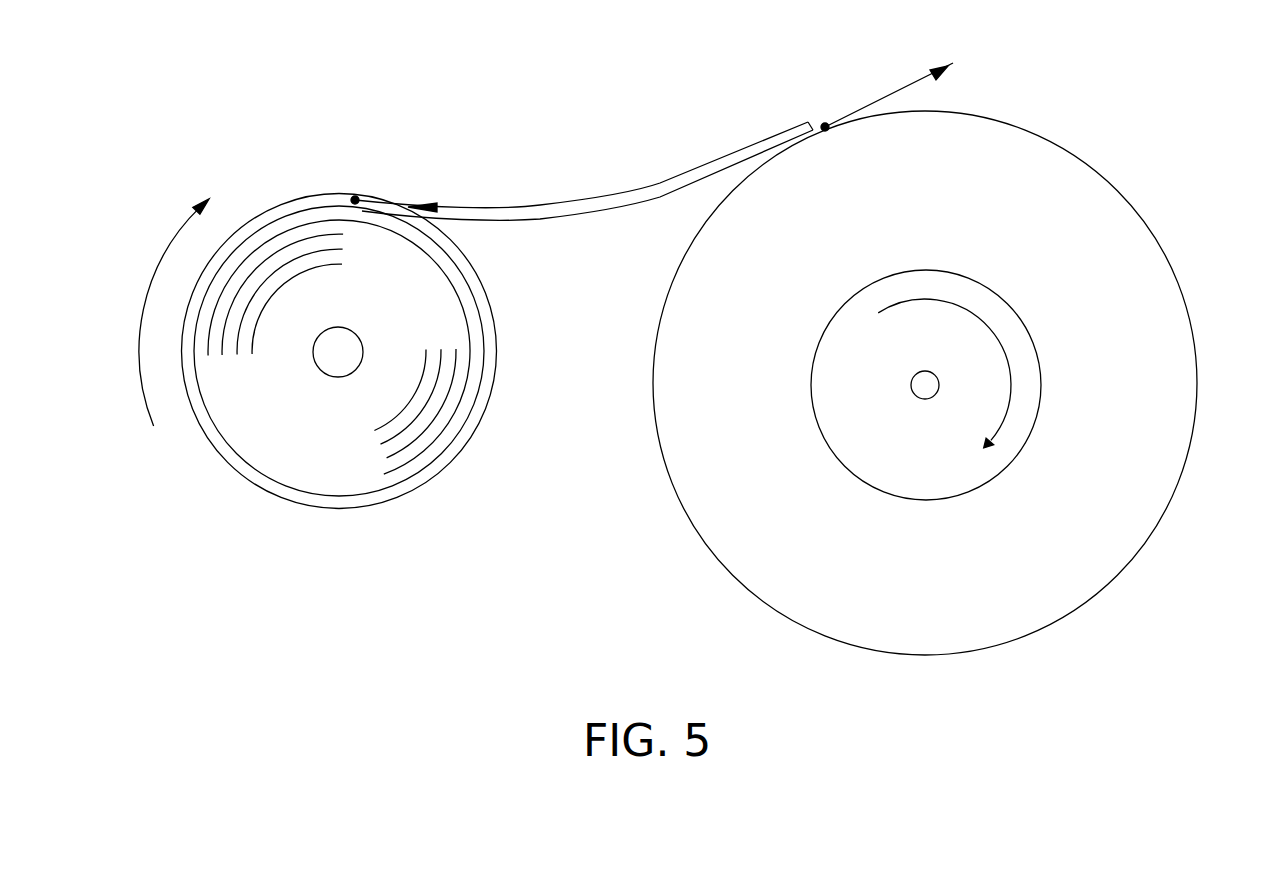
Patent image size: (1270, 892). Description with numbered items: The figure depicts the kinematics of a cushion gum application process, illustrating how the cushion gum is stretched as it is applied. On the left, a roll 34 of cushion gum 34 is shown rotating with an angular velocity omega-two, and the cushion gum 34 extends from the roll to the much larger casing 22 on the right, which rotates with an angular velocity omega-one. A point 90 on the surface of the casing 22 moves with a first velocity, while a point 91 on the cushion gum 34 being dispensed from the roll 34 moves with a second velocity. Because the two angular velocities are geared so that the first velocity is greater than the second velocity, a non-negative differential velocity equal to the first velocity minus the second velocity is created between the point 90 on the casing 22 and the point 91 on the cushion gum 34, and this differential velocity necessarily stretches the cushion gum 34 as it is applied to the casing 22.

The casing 22 is at (1104, 593).
The cushion gum 34 is at (777, 153).
The point on the surface of casing 90 is at (825, 127).
The point on the cushion gum 91 is at (355, 200).